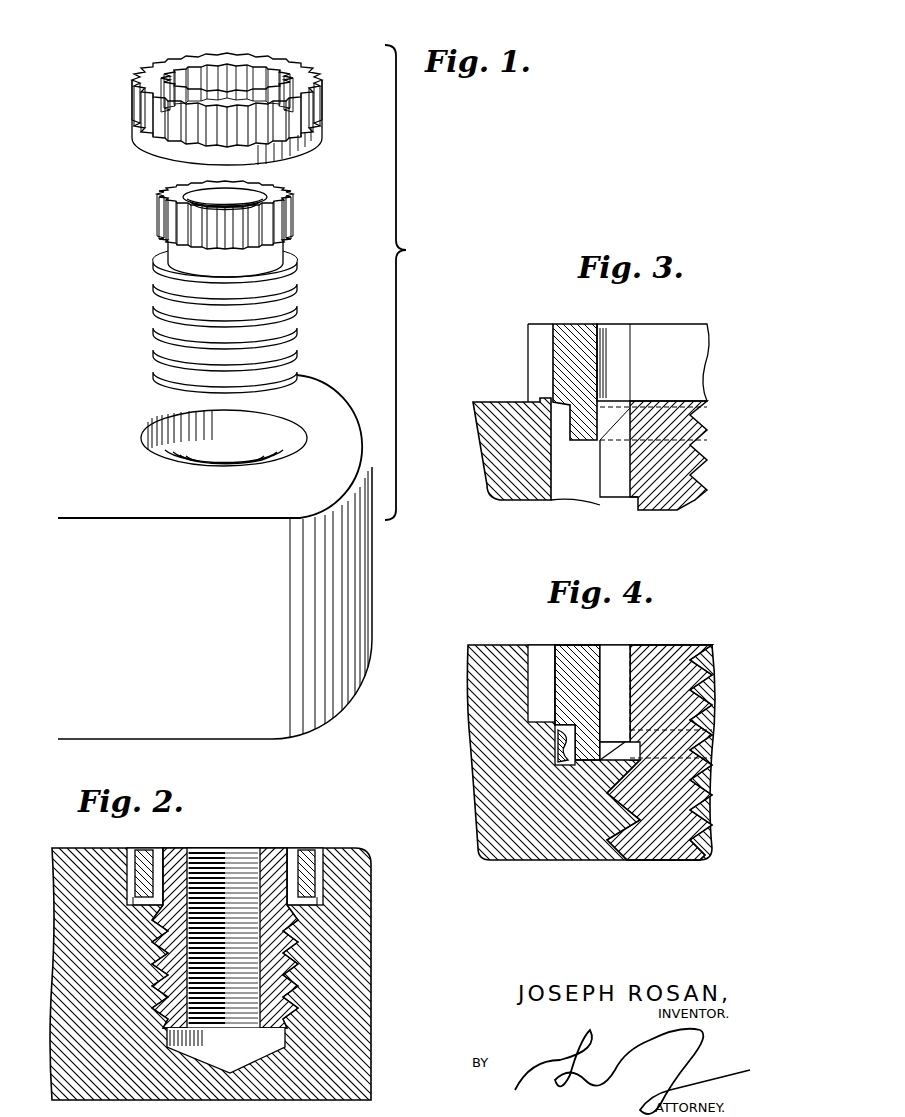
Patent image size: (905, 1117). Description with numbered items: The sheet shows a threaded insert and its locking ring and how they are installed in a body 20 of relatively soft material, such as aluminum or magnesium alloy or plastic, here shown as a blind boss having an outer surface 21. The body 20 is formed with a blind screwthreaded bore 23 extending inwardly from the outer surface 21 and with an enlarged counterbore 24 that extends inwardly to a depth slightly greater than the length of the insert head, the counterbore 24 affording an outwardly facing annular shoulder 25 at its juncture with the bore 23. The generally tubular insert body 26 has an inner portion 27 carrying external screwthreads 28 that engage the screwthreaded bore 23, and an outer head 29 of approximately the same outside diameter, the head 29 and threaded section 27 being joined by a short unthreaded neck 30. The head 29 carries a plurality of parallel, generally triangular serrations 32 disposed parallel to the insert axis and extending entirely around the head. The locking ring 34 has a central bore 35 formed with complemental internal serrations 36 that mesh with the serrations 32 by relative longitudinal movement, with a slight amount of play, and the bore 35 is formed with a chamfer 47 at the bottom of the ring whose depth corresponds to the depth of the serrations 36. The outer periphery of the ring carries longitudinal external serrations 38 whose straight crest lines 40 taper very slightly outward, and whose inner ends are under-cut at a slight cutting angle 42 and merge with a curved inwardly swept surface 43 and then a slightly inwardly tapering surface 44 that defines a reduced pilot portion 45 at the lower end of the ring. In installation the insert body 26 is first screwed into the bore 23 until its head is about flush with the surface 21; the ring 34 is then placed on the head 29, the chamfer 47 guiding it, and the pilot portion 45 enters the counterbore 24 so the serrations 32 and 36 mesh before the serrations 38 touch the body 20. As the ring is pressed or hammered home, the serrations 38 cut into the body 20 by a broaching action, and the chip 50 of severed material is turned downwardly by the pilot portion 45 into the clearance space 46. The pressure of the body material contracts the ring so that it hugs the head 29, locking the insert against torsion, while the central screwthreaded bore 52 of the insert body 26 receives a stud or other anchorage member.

In FIG. 1, the body 20 is at (234, 535).
In FIG. 2, the body 20 is at (372, 905).
In FIG. 3, the body 20 is at (473, 423).
In FIG. 4, the body 20 is at (467, 693).
In FIG. 1, the outer surface 21 is at (94, 372).
In FIG. 2, the outer surface 21 is at (358, 847).
In FIG. 3, the outer surface 21 is at (483, 402).
In FIG. 4, the outer surface 21 is at (480, 645).
In FIG. 1, the screwthreaded bore 23 is at (226, 466).
In FIG. 2, the screwthreaded bore 23 is at (293, 980).
In FIG. 4, the screwthreaded bore 23 is at (630, 838).
In FIG. 1, the counterbore 24 is at (185, 425).
In FIG. 2, the counterbore 24 is at (133, 895).
In FIG. 3, the counterbore 24 is at (563, 503).
In FIG. 1, the annular shoulder 25 is at (170, 458).
In FIG. 2, the annular shoulder 25 is at (163, 912).
In FIG. 4, the annular shoulder 25 is at (592, 758).
In FIG. 1, the insert body 26 is at (222, 287).
In FIG. 2, the insert body 26 is at (237, 931).
In FIG. 3, the insert body 26 is at (668, 450).
In FIG. 4, the insert body 26 is at (644, 750).
In FIG. 1, the inner portion 27 is at (158, 308).
In FIG. 2, the inner portion 27 is at (293, 947).
In FIG. 4, the inner portion 27 is at (667, 850).
In FIG. 1, the external screwthreads 28 is at (292, 346).
In FIG. 2, the external screwthreads 28 is at (157, 978).
In FIG. 4, the external screwthreads 28 is at (623, 853).
In FIG. 1, the head 29 is at (222, 215).
In FIG. 2, the head 29 is at (282, 850).
In FIG. 4, the head 29 is at (653, 648).
In FIG. 1, the neck 30 is at (176, 258).
In FIG. 2, the neck 30 is at (163, 912).
In FIG. 4, the neck 30 is at (688, 735).
In FIG. 1, the serrations 32 is at (170, 231).
In FIG. 2, the serrations 32 is at (293, 857).
In FIG. 3, the serrations 32 is at (603, 488).
In FIG. 4, the serrations 32 is at (623, 678).
In FIG. 1, the locking ring 34 is at (211, 88).
In FIG. 2, the locking ring 34 is at (208, 858).
In FIG. 3, the locking ring 34 is at (572, 384).
In FIG. 4, the locking ring 34 is at (562, 752).
In FIG. 1, the central bore 35 is at (258, 72).
In FIG. 2, the central bore 35 is at (148, 857).
In FIG. 3, the central bore 35 is at (685, 340).
In FIG. 1, the serrations 36 is at (205, 72).
In FIG. 3, the serrations 36 is at (623, 340).
In FIG. 4, the serrations 36 is at (615, 693).
In FIG. 1, the serrations 38 is at (132, 108).
In FIG. 2, the serrations 38 is at (127, 862).
In FIG. 3, the serrations 38 is at (535, 327).
In FIG. 4, the serrations 38 is at (542, 657).
In FIG. 3, the crest lines 40 is at (527, 345).
In FIG. 4, the crest lines 40 is at (520, 677).
In FIG. 3, the cutting angle 42 is at (520, 403).
In FIG. 3, the curved inwardly swept surface 43 is at (593, 437).
In FIG. 3, the inwardly tapering surface 44 is at (602, 440).
In FIG. 1, the pilot portion 45 is at (158, 147).
In FIG. 3, the pilot portion 45 is at (587, 430).
In FIG. 4, the pilot portion 45 is at (587, 763).
In FIG. 4, the clearance space 46 is at (555, 752).
In FIG. 3, the chamfer 47 is at (653, 417).
In FIG. 4, the chamfer 47 is at (693, 753).
In FIG. 4, the chip 50 is at (555, 747).
In FIG. 1, the central screwthreaded bore 52 is at (166, 193).
In FIG. 2, the central screwthreaded bore 52 is at (248, 858).
In FIG. 3, the central screwthreaded bore 52 is at (707, 457).
In FIG. 4, the central screwthreaded bore 52 is at (688, 685).